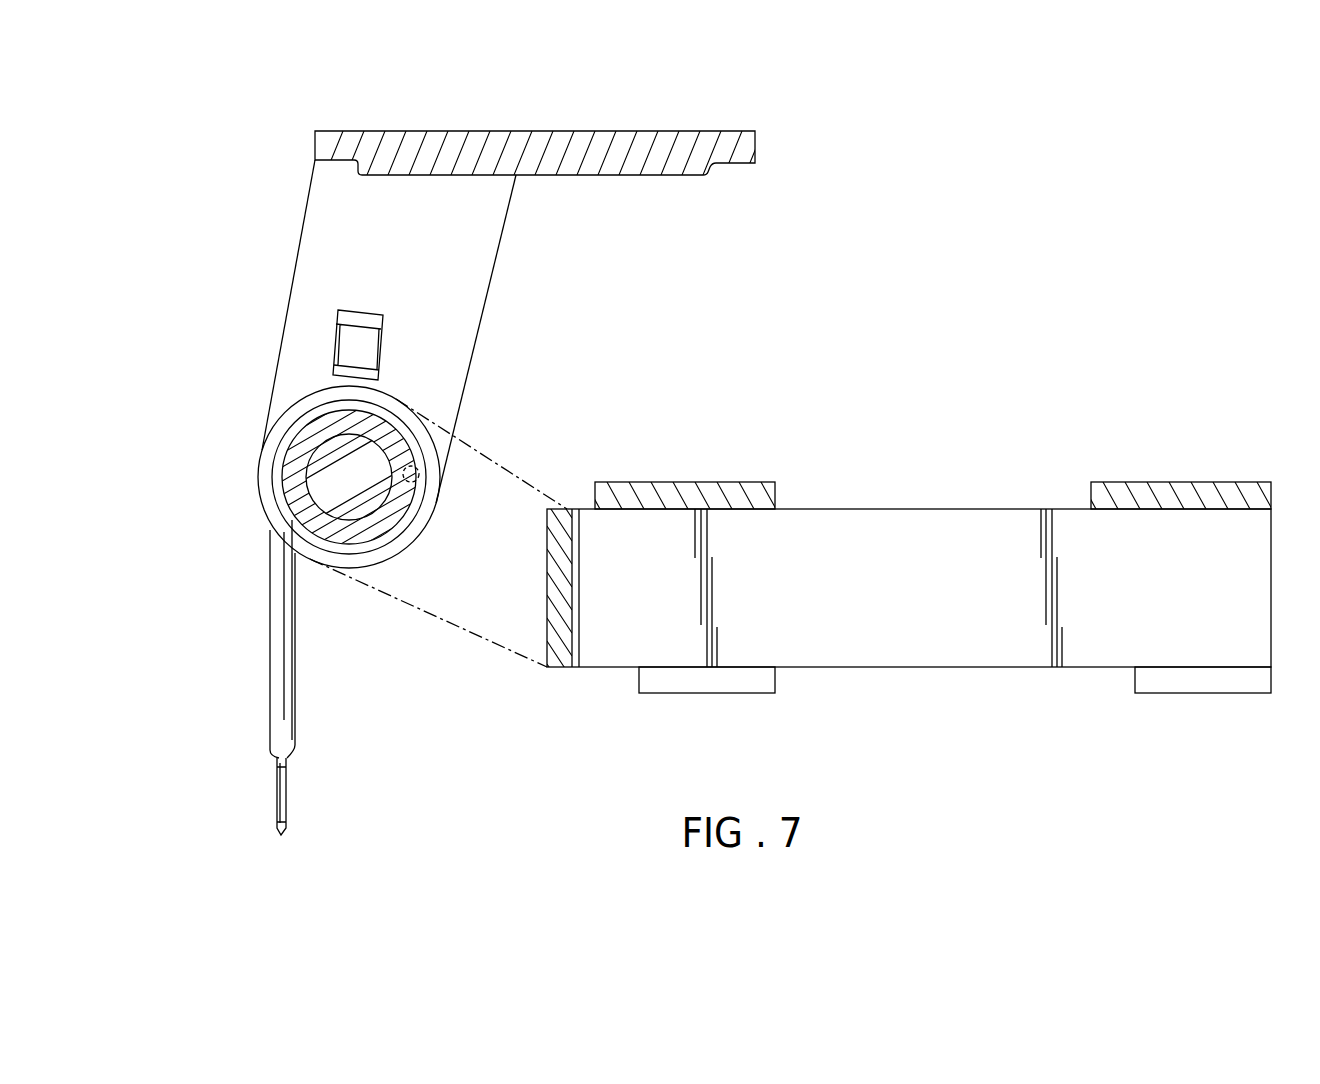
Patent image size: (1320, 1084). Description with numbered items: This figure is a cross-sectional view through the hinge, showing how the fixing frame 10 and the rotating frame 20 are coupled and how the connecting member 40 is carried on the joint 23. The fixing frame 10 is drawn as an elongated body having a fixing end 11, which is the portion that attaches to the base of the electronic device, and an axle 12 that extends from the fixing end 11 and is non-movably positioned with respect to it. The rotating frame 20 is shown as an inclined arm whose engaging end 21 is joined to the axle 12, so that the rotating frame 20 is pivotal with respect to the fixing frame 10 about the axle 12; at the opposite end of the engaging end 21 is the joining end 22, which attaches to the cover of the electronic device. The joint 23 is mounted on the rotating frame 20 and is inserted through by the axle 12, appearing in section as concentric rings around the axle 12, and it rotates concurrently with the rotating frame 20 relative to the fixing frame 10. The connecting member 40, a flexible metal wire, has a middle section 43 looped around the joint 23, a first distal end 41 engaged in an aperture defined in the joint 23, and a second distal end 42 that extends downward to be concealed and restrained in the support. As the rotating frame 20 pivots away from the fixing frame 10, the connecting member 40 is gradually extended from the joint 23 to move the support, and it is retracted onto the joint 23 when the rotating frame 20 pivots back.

The fixing frame 10 is at (1019, 438).
The fixing end 11 is at (908, 533).
The axle 12 is at (345, 505).
The rotating frame 20 is at (280, 234).
The engaging end 21 is at (315, 277).
The joining end 22 is at (638, 165).
The joint 23 is at (262, 470).
The connecting member 40 is at (222, 645).
The first distal end 41 is at (412, 480).
The second distal end 42 is at (278, 780).
The middle section 43 is at (290, 436).